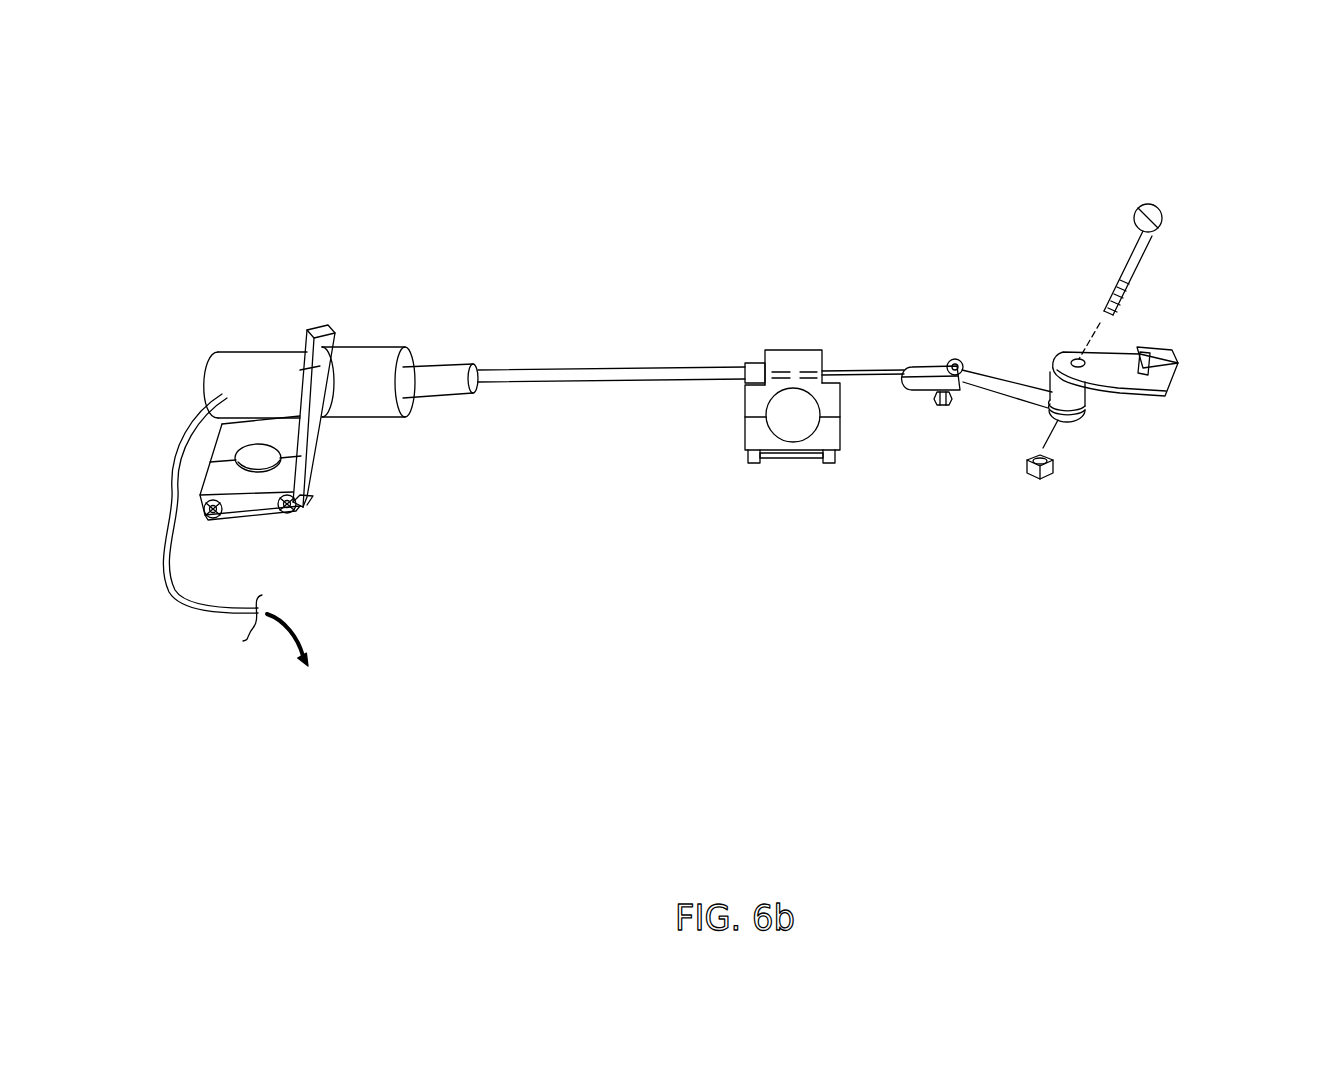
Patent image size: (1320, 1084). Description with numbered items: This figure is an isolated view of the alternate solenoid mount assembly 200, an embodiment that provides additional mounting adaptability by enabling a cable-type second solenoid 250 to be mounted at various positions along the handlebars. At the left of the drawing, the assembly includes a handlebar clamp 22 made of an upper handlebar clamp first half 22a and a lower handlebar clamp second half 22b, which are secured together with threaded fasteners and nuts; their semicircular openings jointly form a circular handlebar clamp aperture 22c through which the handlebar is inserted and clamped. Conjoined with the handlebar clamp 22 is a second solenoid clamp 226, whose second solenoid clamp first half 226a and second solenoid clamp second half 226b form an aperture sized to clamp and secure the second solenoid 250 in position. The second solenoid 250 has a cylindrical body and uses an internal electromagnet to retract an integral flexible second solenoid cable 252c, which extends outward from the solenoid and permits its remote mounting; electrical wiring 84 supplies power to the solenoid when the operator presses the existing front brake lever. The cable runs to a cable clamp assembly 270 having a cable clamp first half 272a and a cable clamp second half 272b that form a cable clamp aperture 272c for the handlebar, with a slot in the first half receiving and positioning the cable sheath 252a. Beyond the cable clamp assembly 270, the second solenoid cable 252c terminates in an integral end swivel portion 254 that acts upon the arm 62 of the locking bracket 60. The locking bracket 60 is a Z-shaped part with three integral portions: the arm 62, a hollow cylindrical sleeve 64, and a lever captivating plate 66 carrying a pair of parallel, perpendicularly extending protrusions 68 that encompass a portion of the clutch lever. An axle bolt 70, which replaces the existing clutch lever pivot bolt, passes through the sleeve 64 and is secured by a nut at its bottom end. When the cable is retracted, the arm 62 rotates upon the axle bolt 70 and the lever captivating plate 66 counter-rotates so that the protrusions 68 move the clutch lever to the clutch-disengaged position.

The alternate solenoid mount assembly 200 is at (467, 233).
The second solenoid 250 is at (453, 382).
The second solenoid clamp 226 is at (286, 399).
The second solenoid clamp first half 226a is at (317, 347).
The second solenoid clamp second half 226b is at (303, 388).
The handlebar clamp 22 is at (315, 455).
The upper handlebar clamp first half 22a is at (295, 487).
The lower handlebar clamp second half 22b is at (292, 440).
The handlebar clamp aperture 22c is at (317, 492).
The electrical wiring 84 is at (225, 612).
The second solenoid cable sheath 252a is at (618, 367).
The second solenoid cable 252c is at (877, 370).
The cable clamp assembly 270 is at (832, 488).
The cable clamp first half 272a is at (837, 460).
The cable clamp second half 272b is at (758, 397).
The cable clamp aperture 272c is at (800, 388).
The end swivel portion 254 is at (924, 389).
The arm 62 is at (1007, 397).
The locking bracket 60 is at (1033, 385).
The hollow cylindrical sleeve 64 is at (1067, 398).
The lever captivating plate 66 is at (1098, 368).
The protrusions 68 is at (1172, 353).
The axle bolt 70 is at (1135, 262).